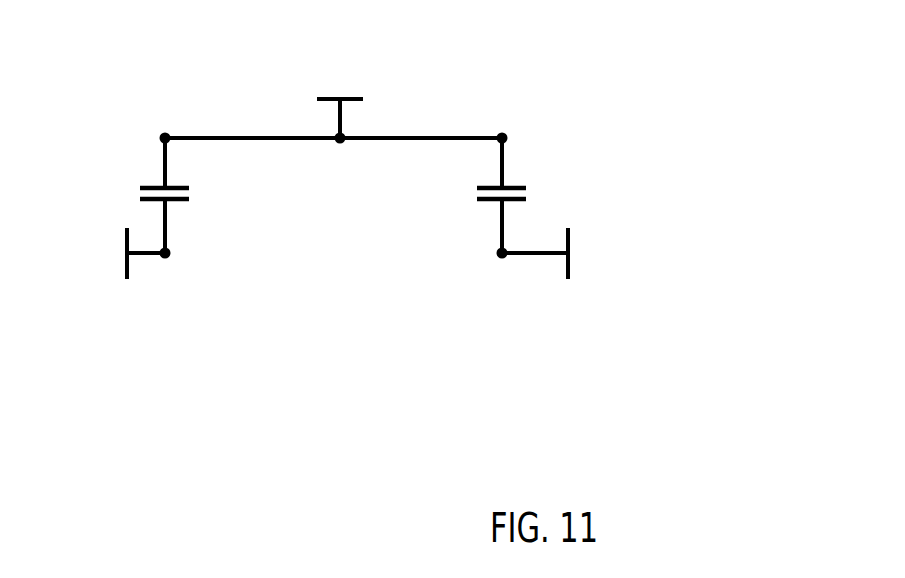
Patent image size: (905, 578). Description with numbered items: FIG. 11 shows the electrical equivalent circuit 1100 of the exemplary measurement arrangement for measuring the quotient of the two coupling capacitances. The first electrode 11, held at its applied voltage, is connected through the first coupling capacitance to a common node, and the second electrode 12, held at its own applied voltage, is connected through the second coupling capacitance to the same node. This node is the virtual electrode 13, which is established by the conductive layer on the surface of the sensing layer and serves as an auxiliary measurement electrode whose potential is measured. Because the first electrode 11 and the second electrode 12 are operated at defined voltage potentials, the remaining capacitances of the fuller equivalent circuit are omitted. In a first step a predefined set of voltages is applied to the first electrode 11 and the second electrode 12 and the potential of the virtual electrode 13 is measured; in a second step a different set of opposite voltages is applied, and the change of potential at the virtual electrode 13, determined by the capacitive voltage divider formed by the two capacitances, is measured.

The first electrode 11 is at (124, 244).
The second electrode 12 is at (572, 254).
The virtual electrode 13 is at (326, 97).
The electrical equivalent circuit 1100 is at (800, 555).